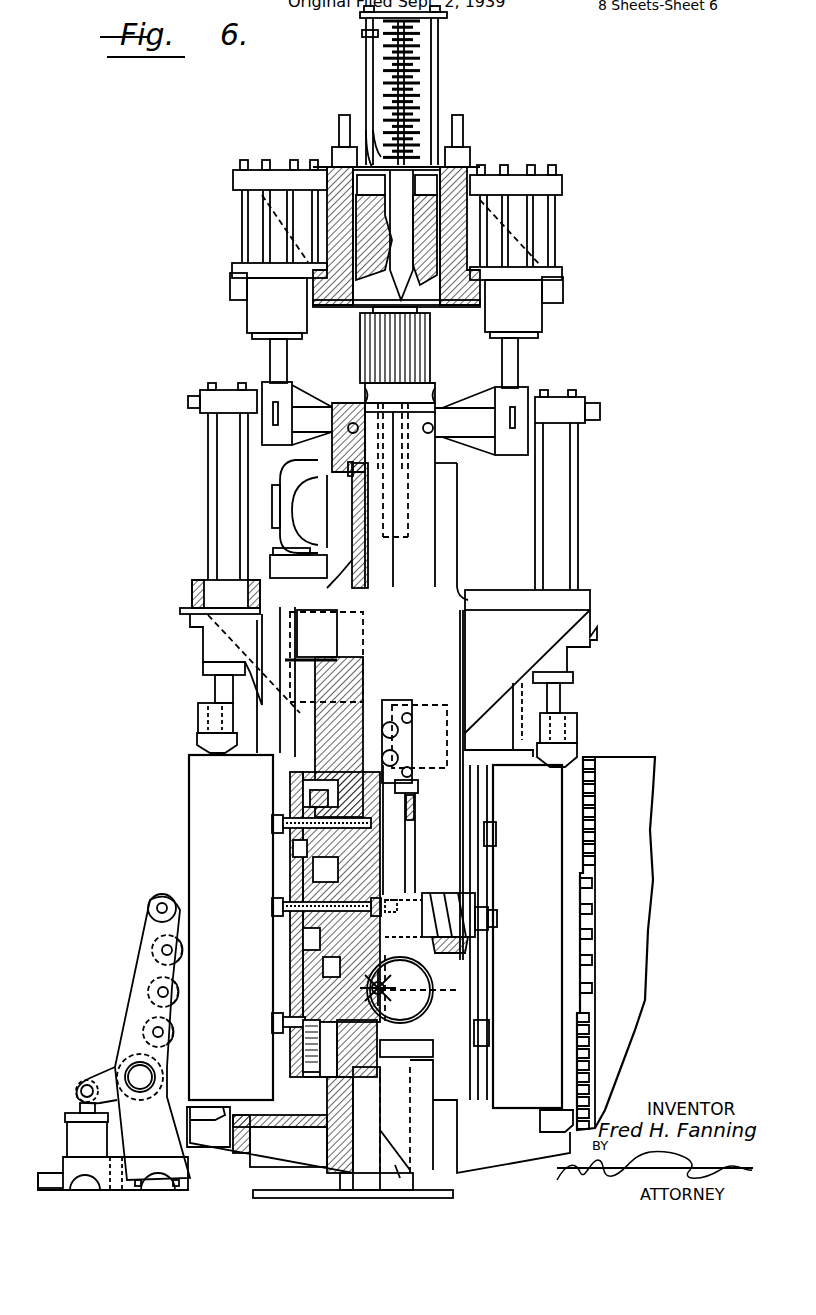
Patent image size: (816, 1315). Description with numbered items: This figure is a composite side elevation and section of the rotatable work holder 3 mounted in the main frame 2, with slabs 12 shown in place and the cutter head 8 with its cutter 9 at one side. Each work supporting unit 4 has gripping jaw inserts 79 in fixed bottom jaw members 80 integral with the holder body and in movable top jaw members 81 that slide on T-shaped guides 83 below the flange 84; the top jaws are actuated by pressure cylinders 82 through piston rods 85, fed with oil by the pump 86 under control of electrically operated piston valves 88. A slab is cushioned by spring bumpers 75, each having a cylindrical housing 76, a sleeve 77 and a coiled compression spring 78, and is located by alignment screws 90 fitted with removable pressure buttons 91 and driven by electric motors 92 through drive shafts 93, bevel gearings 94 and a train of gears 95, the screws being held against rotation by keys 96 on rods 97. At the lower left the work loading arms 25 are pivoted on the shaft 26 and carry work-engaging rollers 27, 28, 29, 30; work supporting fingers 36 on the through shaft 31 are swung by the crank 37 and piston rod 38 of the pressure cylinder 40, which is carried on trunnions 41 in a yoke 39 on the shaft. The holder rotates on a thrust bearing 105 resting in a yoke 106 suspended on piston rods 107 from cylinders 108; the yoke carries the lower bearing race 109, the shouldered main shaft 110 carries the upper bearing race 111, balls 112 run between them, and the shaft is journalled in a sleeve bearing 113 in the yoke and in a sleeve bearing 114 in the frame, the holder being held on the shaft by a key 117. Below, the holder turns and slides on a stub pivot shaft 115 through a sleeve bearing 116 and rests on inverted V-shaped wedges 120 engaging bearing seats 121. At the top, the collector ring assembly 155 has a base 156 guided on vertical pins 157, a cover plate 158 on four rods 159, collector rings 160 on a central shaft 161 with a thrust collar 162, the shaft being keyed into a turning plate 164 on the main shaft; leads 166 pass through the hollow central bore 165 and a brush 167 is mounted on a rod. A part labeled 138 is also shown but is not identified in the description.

The main frame 2 is at (445, 305).
The rotatable work holder 3 is at (428, 575).
The work supporting unit 4 is at (198, 702).
The cutter head 8 is at (645, 825).
The cutter 9 is at (594, 918).
The slab 12 is at (216, 885).
The work loading arms 25 is at (137, 958).
The shaft 26 is at (165, 1180).
The work-engaging roller 27 is at (152, 897).
The work-engaging roller 28 is at (157, 940).
The work-engaging roller 29 is at (150, 985).
The work-engaging roller 30 is at (145, 1025).
The through shaft 31 is at (138, 1072).
The work supporting fingers 36 is at (180, 1125).
The crank 37 is at (105, 1080).
The piston rod 38 is at (88, 1112).
The yoke 39 is at (130, 1175).
The pressure cylinder 40 is at (87, 1139).
The trunnions 41 is at (62, 1173).
The spring bumper 75 is at (272, 910).
The cylindrical housing 76 is at (446, 893).
The sleeve 77 is at (430, 893).
The coiled compression spring 78 is at (425, 897).
The gripping jaw inserts 79 is at (200, 748).
The bottom jaw members 80 is at (228, 1145).
The movable top jaw members 81 is at (198, 720).
The pressure cylinders 82 is at (240, 489).
The T-shaped guides 83 is at (288, 615).
The flange 84 is at (192, 595).
The piston rods 85 is at (220, 682).
The pump 86 is at (320, 515).
The electrically operated piston valves 88 is at (400, 715).
The alignment screws 90 is at (285, 815).
The pressure buttons 91 is at (272, 826).
The electric motors 92 is at (430, 965).
The drive shafts 93 is at (440, 985).
The bevel gearings 94 is at (357, 1048).
The gears 95 is at (332, 885).
The keys 96 is at (335, 924).
The rods 97 is at (290, 852).
The thrust bearing 105 is at (432, 408).
The yoke 106 is at (262, 395).
The piston rods 107 is at (272, 346).
The cylinders 108 is at (258, 208).
The lower bearing race 109 is at (345, 440).
The main shaft 110 is at (370, 394).
The upper bearing race 111 is at (330, 410).
The balls 112 is at (345, 425).
The sleeve bearing 113 is at (350, 470).
The sleeve bearing 114 is at (375, 310).
The stub pivot shaft 115 is at (331, 1125).
The sleeve bearing 116 is at (368, 1120).
The key 117 is at (355, 633).
The inverted V-shaped wedges 120 is at (405, 1165).
The inverted V-shaped bearing seats 121 is at (405, 1178).
The spline gear 138 is at (415, 338).
The collector ring assembly 155 is at (420, 62).
The base 156 is at (465, 162).
The vertical pins 157 is at (339, 122).
The cover plate 158 is at (447, 14).
The rods 159 is at (366, 60).
The collector rings 160 is at (422, 84).
The central shaft 161 is at (380, 92).
The thrust collar 162 is at (385, 118).
The turning plate 164 is at (396, 230).
The hollow central bore 165 is at (446, 522).
The leads 166 is at (440, 110).
The brushes 167 is at (362, 32).